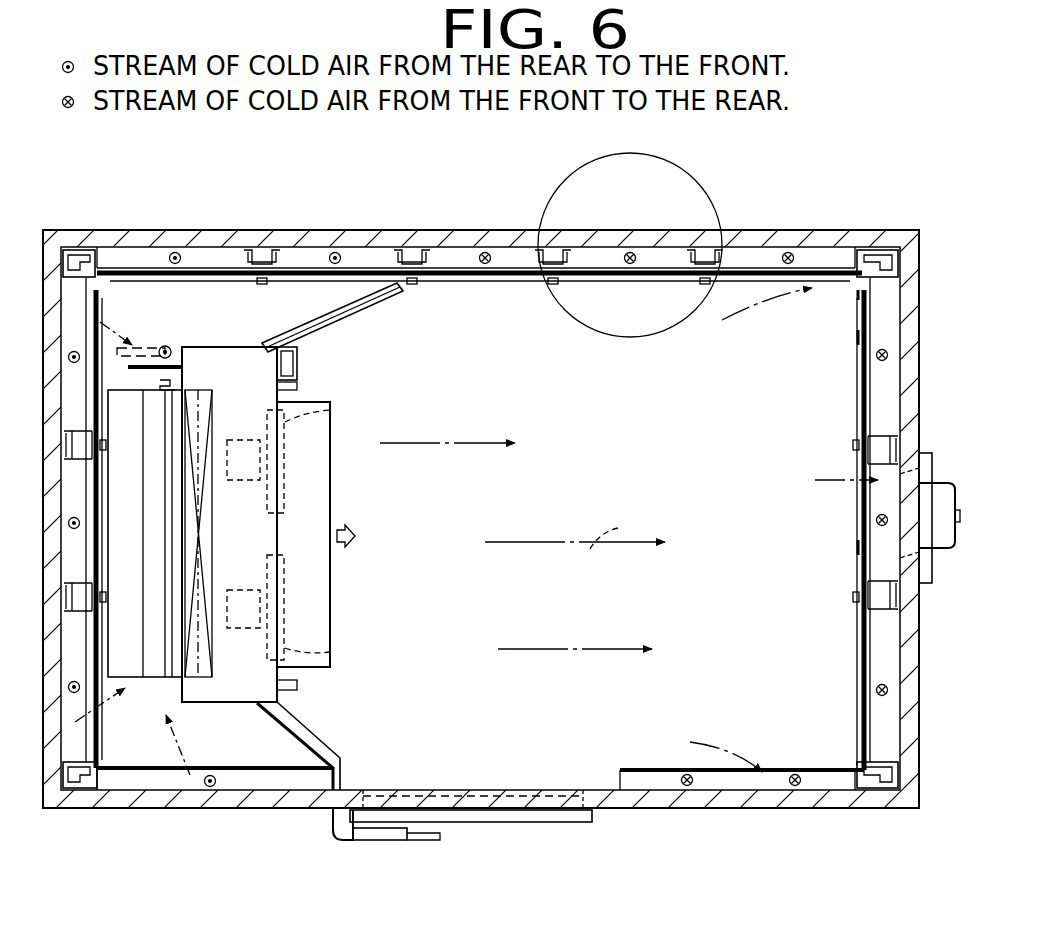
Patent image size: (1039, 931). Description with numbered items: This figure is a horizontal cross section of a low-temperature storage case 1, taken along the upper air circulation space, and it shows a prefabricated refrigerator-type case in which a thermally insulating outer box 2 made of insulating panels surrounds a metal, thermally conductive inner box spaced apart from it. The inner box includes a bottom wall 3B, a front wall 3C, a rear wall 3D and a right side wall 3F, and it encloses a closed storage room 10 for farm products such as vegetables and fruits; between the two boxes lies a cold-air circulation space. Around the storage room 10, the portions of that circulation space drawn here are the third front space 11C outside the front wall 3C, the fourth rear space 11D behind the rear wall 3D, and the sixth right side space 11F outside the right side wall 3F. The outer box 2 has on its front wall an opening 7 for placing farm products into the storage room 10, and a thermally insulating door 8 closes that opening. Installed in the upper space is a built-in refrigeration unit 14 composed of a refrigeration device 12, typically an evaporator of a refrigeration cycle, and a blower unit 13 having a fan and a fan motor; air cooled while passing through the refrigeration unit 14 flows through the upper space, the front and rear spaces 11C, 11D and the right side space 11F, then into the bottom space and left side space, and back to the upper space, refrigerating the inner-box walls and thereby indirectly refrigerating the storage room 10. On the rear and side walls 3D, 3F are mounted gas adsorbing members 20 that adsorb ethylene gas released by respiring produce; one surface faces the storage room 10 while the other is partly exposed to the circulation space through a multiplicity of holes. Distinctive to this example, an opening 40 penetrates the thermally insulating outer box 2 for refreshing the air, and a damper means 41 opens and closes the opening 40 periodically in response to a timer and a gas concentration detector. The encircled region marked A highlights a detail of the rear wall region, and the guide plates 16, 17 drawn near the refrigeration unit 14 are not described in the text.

The low-temperature storage case 1 is at (326, 222).
The thermally insulating outer box 2 is at (482, 240).
The bottom wall 3B is at (828, 300).
The front wall 3C is at (258, 775).
The rear wall 3D is at (567, 270).
The right side wall 3F is at (890, 700).
The opening 7 is at (558, 812).
The thermally insulating door 8 is at (488, 823).
The storage room 10 is at (784, 636).
The third front space 11C is at (162, 785).
The fourth rear space 11D is at (447, 247).
The sixth right side space 11F is at (900, 655).
The refrigeration device 12 is at (195, 660).
The blower unit 13 is at (333, 414).
The refrigeration unit 14 is at (245, 665).
The lower guide plate 16 is at (330, 737).
The upper guide plate 17 is at (327, 322).
The gas adsorbing member 20 is at (686, 302).
The opening 40 is at (950, 500).
The damper means 41 is at (935, 465).
The detail portion A is at (707, 193).